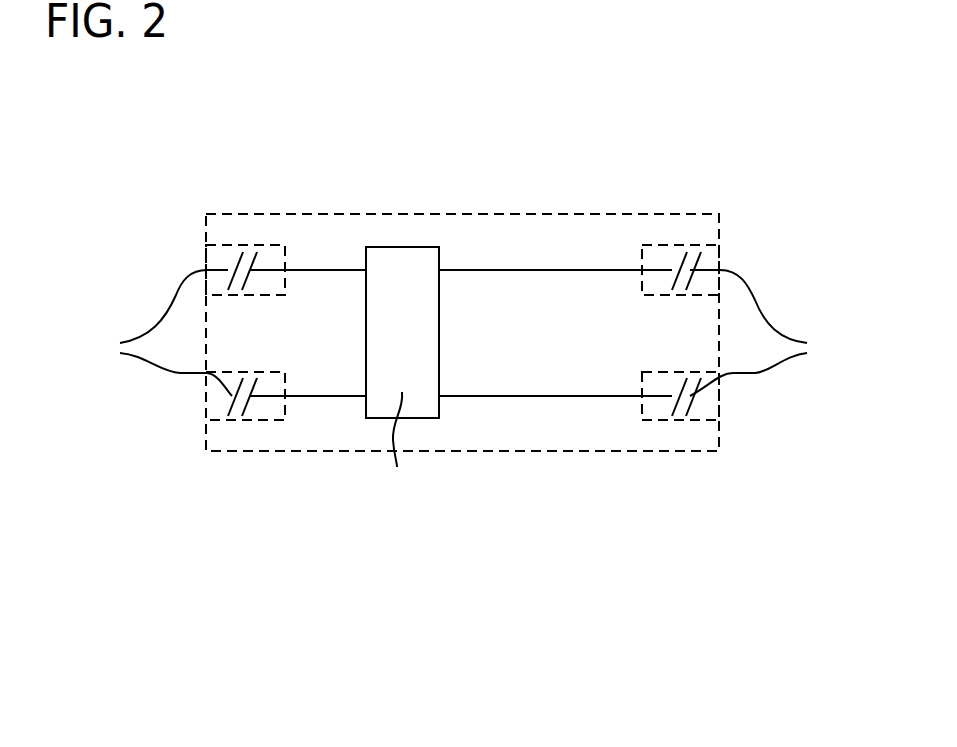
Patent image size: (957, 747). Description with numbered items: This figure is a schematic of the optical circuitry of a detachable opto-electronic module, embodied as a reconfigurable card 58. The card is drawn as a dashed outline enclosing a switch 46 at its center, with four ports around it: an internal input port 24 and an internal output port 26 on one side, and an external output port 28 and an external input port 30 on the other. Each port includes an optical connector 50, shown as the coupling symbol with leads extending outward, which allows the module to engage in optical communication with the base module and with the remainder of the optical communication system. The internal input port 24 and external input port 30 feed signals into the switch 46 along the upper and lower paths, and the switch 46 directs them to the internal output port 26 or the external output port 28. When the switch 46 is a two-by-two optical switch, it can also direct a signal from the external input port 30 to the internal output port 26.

The reconfigurable card 58 is at (618, 188).
The switch 46 is at (405, 247).
The internal input port 24 is at (227, 244).
The internal output port 26 is at (247, 420).
The external output port 28 is at (700, 245).
The external input port 30 is at (675, 420).
The optical connector 50 is at (462, 333).